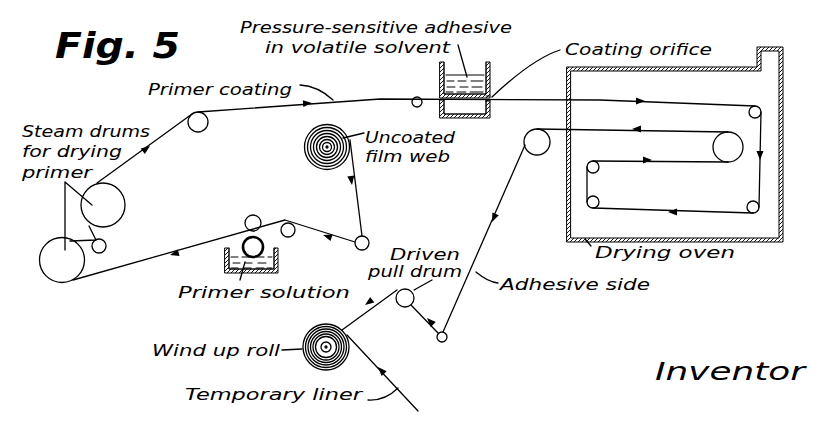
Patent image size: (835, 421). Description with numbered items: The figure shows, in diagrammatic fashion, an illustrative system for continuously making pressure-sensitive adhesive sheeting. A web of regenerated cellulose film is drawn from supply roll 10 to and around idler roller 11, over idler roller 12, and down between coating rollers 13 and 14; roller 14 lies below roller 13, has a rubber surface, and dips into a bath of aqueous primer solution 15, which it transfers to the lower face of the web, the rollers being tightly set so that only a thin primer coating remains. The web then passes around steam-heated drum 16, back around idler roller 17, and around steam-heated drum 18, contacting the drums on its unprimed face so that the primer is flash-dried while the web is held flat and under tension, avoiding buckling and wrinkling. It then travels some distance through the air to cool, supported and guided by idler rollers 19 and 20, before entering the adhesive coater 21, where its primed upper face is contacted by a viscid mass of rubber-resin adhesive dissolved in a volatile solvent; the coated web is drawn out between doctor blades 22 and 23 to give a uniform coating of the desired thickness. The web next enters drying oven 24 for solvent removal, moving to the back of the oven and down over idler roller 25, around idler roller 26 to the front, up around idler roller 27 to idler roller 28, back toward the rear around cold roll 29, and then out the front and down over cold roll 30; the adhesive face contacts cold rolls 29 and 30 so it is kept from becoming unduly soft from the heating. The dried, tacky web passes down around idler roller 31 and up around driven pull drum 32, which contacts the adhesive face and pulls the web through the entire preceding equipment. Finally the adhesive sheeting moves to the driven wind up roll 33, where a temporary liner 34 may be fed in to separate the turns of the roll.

The supply roll 10 is at (305, 153).
The idler roller 11 is at (358, 238).
The idler roller 12 is at (290, 236).
The coating roller 13 is at (251, 218).
The coating roller 14 is at (247, 244).
The primer solution tank 15 is at (278, 262).
The steam-heated drum 16 is at (56, 250).
The idler roller 17 is at (106, 246).
The steam-heated drum 18 is at (117, 200).
The idler roller 19 is at (205, 126).
The idler roller 20 is at (399, 109).
The adhesive coater 21 is at (440, 77).
The doctor blade 22 is at (490, 80).
The doctor blade 23 is at (492, 109).
The drying oven 24 is at (567, 203).
The idler roller 25 is at (749, 112).
The idler roller 26 is at (748, 203).
The idler roller 27 is at (599, 202).
The idler roller 28 is at (599, 168).
The cold roll 29 is at (713, 147).
The cold roll 30 is at (537, 142).
The idler roller 31 is at (446, 341).
The driven pull drum 32 is at (407, 306).
The wind up roll 33 is at (310, 334).
The temporary liner 34 is at (393, 384).